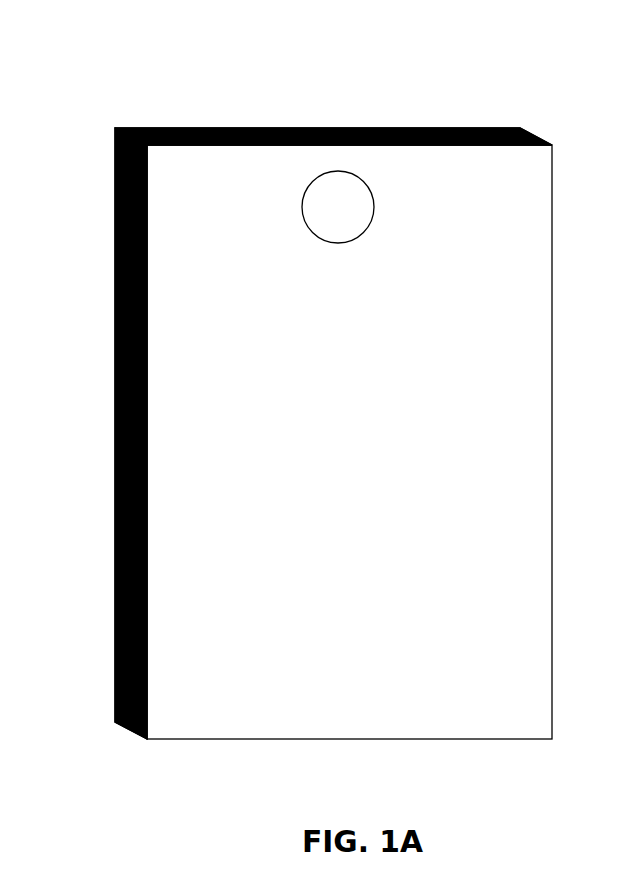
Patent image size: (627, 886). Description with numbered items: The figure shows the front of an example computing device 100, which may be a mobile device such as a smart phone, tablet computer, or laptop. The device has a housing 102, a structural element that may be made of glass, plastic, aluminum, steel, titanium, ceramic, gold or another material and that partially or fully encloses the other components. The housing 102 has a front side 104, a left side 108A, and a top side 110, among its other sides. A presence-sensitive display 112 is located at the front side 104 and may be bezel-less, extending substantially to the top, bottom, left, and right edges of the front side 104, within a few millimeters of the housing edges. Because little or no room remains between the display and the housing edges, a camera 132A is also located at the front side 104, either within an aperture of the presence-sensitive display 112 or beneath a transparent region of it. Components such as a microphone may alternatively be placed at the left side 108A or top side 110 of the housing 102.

The computing device 100 is at (477, 66).
The housing 102 is at (115, 127).
The front side 104 is at (170, 212).
The left side 108A is at (115, 257).
The top side 110 is at (278, 128).
The presence-sensitive display 112 is at (375, 398).
The camera 132A is at (357, 215).